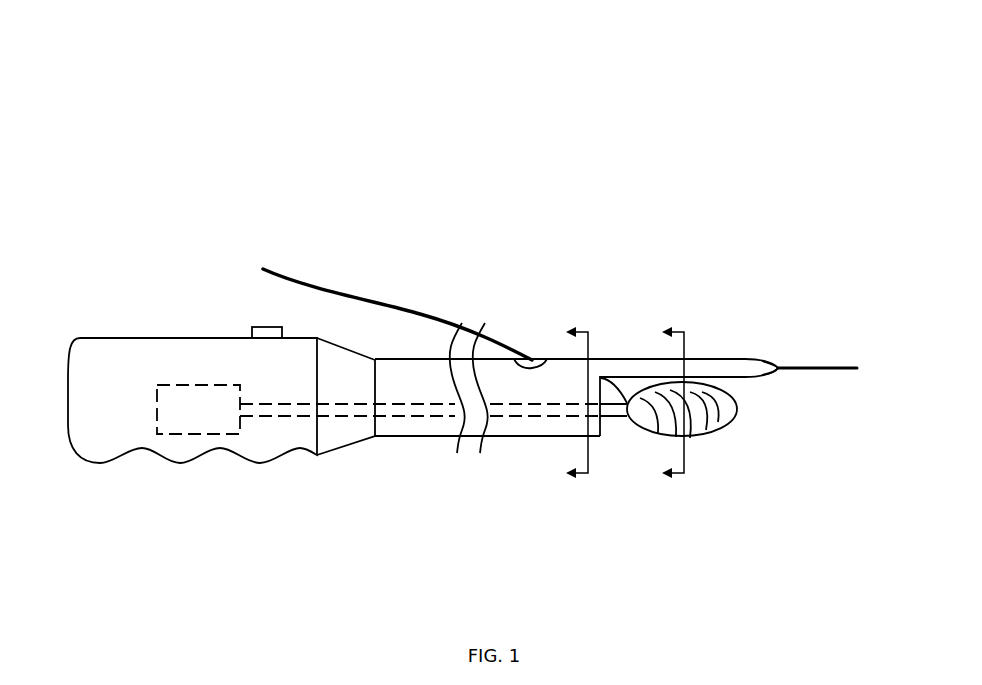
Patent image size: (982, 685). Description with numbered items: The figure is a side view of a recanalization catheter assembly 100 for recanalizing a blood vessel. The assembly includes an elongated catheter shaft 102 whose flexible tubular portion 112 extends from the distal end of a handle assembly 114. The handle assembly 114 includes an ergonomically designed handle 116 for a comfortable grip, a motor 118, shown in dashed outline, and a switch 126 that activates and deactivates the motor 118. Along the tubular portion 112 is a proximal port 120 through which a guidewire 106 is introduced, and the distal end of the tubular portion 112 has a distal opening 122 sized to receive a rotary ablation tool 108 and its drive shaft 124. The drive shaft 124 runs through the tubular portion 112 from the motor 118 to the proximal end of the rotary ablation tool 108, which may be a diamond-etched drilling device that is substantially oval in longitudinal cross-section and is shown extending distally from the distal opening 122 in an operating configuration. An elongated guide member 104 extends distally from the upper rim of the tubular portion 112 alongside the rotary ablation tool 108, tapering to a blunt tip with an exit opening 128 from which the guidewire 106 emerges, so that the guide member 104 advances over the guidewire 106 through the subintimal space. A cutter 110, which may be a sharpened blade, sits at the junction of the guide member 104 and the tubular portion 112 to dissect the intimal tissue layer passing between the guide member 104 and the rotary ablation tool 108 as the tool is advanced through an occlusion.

The recanalization catheter assembly 100 is at (450, 58).
The catheter shaft 102 is at (489, 507).
The guide member 104 is at (700, 359).
The guidewire 106 is at (338, 295).
The rotary ablation tool 108 is at (712, 425).
The cutter 110 is at (608, 377).
The tubular portion 112 is at (515, 430).
The handle assembly 114 is at (221, 507).
The handle 116 is at (160, 338).
The motor 118 is at (198, 408).
The proximal port 120 is at (535, 357).
The distal opening 122 is at (601, 437).
The drive shaft 124 is at (348, 415).
The switch 126 is at (265, 327).
The exit opening 128 is at (778, 368).